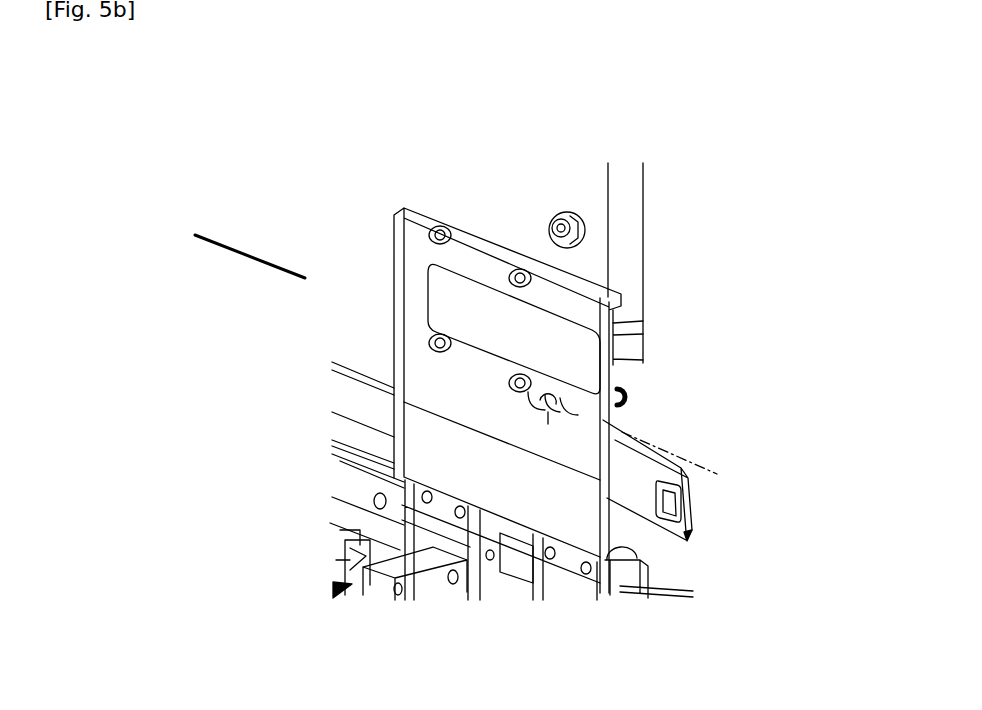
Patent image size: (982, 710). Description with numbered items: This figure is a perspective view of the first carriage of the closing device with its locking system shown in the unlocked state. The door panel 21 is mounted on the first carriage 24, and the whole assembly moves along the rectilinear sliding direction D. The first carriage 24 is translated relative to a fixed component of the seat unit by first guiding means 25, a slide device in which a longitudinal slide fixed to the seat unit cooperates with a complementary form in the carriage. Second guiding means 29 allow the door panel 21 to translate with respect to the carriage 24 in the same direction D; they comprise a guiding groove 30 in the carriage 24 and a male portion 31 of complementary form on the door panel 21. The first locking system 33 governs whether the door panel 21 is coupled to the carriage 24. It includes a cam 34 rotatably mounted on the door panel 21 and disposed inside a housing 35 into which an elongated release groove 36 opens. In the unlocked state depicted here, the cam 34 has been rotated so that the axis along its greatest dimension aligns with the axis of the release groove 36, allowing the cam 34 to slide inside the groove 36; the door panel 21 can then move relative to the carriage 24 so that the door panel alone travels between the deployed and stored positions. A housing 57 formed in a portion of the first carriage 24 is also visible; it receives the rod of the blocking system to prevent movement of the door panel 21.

The door panel 21 is at (628, 182).
The first carriage 24 is at (367, 268).
The sliding direction D is at (233, 245).
The male portion 31 is at (613, 325).
The guiding groove 30 is at (615, 338).
The second guiding means 29 is at (627, 378).
The release groove 36 is at (608, 421).
The housing 57 is at (678, 503).
The first guiding means 25 is at (687, 582).
The first locking system 33 is at (487, 397).
The housing 35 is at (533, 404).
The cam 34 is at (415, 477).